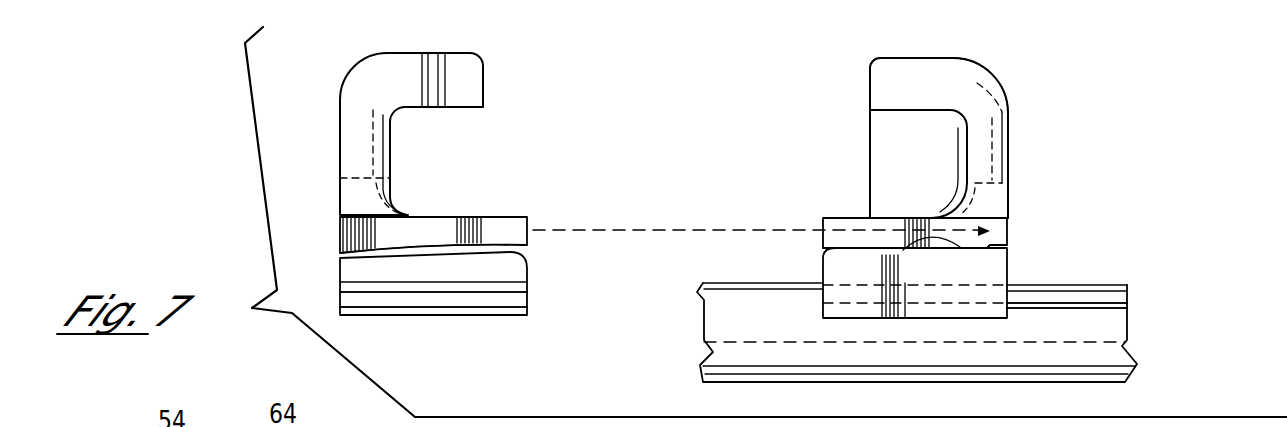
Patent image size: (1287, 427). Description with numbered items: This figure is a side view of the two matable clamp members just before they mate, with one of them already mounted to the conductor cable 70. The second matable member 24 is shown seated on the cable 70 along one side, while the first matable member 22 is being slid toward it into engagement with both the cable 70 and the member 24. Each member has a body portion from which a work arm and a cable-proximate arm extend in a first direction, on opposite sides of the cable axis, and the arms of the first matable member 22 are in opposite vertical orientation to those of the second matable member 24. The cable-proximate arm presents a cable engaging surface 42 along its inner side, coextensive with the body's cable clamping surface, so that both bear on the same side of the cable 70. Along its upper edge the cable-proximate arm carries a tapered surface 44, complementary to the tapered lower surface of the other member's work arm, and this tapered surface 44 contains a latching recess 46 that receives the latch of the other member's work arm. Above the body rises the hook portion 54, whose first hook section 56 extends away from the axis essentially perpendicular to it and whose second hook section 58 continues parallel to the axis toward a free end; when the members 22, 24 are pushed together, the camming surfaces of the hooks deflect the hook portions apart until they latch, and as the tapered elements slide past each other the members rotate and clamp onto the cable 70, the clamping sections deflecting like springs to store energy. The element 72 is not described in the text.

The first matable member 22 is at (334, 134).
The second matable member 24 is at (1033, 121).
The cable engaging surface 42 is at (512, 298).
The tapered surface 44 is at (950, 248).
The latching recess 46 is at (1003, 242).
The hook portion 54 is at (1019, 104).
The first hook section 56 is at (1008, 143).
The second hook section 58 is at (917, 58).
The conductor cable 70 is at (757, 386).
The rail flange 72 is at (1098, 298).